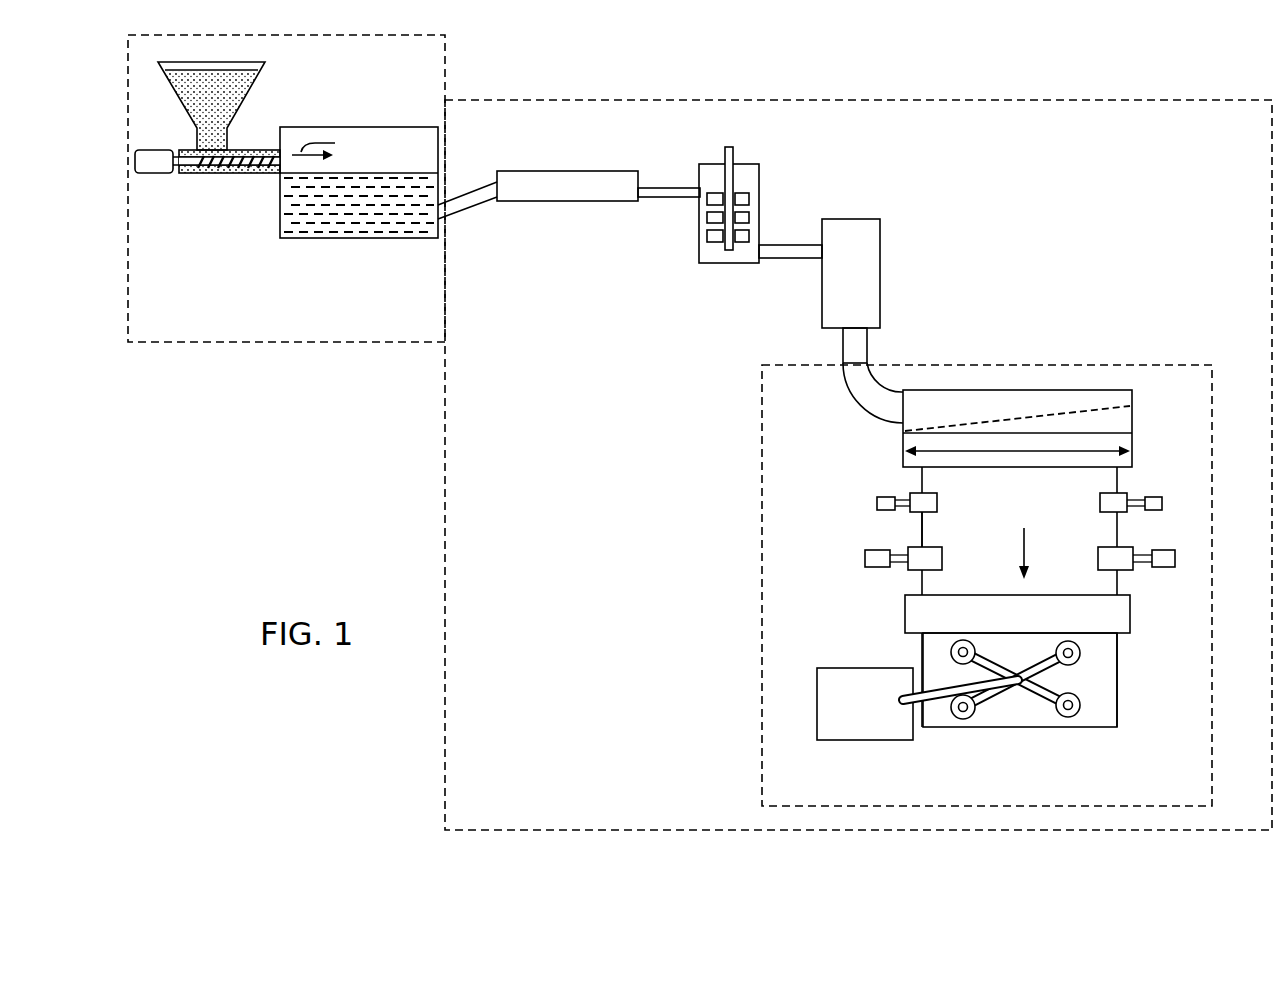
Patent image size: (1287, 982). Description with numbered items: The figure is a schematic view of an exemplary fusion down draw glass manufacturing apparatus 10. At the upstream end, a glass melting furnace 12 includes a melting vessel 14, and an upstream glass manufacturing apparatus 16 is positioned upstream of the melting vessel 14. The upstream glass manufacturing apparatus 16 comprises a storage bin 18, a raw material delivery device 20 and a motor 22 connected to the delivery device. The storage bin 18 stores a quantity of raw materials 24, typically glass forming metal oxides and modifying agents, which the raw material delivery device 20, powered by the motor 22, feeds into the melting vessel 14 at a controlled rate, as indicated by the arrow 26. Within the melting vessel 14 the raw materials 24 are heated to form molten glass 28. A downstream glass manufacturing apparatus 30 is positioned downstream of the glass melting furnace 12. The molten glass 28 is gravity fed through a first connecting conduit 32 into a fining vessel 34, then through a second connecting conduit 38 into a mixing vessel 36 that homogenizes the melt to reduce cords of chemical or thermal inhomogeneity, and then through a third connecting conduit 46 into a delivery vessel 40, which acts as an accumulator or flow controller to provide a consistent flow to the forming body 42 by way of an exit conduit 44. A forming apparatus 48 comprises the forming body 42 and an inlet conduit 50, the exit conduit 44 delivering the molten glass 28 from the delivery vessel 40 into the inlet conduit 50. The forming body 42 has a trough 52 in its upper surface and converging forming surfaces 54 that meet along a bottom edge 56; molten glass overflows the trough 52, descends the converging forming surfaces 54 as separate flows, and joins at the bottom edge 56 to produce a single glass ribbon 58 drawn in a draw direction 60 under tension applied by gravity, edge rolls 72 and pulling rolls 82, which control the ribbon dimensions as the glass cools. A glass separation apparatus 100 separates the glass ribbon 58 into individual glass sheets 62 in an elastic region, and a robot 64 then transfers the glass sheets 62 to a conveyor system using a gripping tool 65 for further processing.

The glass manufacturing apparatus 10 is at (367, 408).
The glass melting furnace 12 is at (292, 342).
The melting vessel 14 is at (325, 128).
The upstream glass manufacturing apparatus 16 is at (180, 199).
The storage bin 18 is at (256, 86).
The raw material delivery device 20 is at (246, 173).
The motor 22 is at (146, 150).
The raw materials 24 is at (218, 102).
The arrow 26 is at (329, 147).
The molten glass 28 is at (308, 227).
The downstream glass manufacturing apparatus 30 is at (705, 100).
The first connecting conduit 32 is at (453, 213).
The fining vessel 34 is at (552, 201).
The mixing vessel 36 is at (699, 244).
The second connecting conduit 38 is at (668, 197).
The delivery vessel 40 is at (822, 303).
The forming body 42 is at (1133, 425).
The exit conduit 44 is at (867, 345).
The third connecting conduit 46 is at (787, 258).
The forming apparatus 48 is at (1025, 365).
The inlet conduit 50 is at (865, 411).
The trough 52 is at (1067, 413).
The converging forming surfaces 54 is at (905, 463).
The bottom edge 56 is at (1117, 467).
The glass ribbon 58 is at (922, 518).
The draw direction 60 is at (1036, 553).
The glass sheets 62 is at (1117, 677).
The robot 64 is at (835, 662).
The gripping tool 65 is at (1040, 697).
The edge rolls 72 is at (937, 503).
The pulling rolls 82 is at (942, 558).
The glass separation apparatus 100 is at (1130, 605).